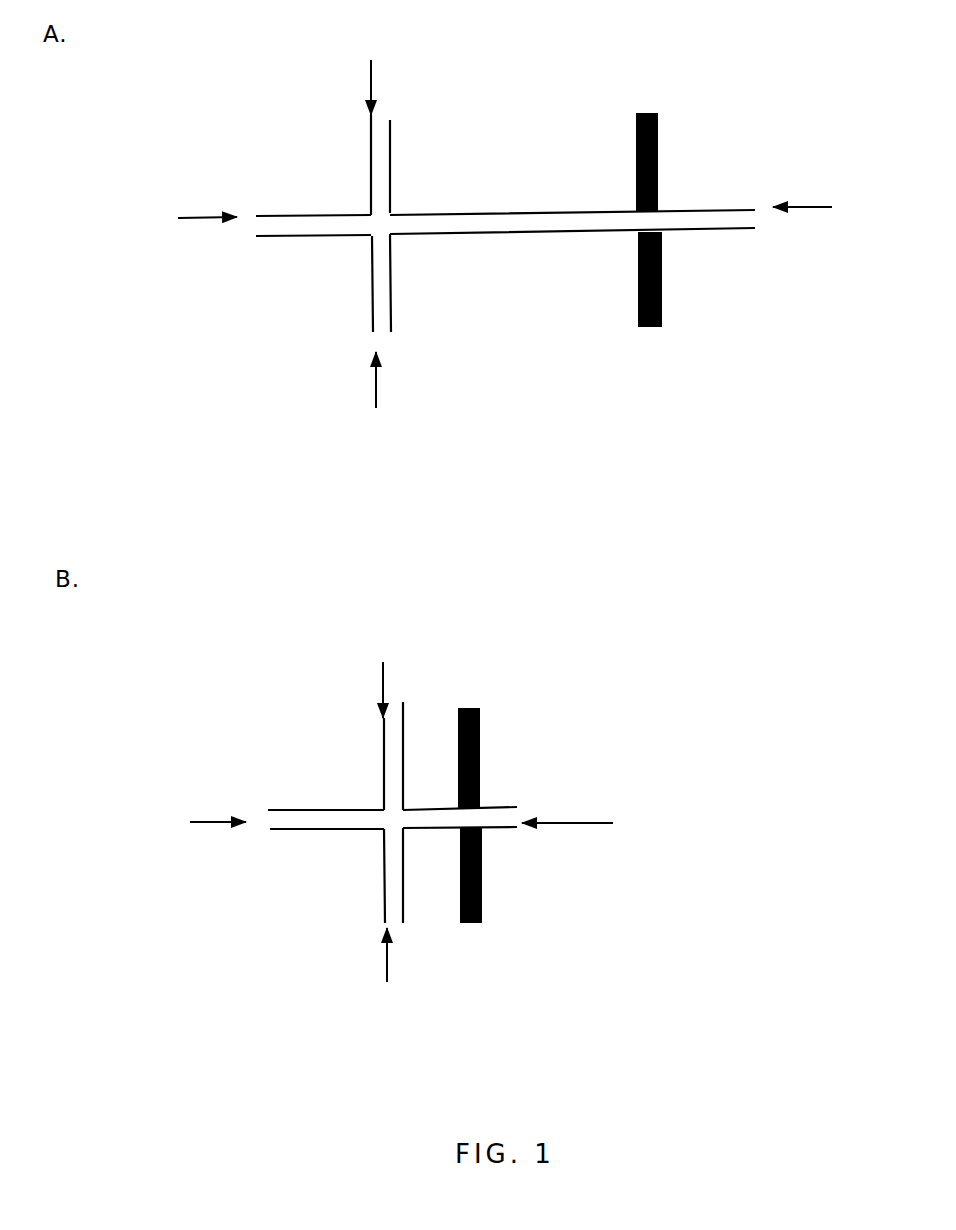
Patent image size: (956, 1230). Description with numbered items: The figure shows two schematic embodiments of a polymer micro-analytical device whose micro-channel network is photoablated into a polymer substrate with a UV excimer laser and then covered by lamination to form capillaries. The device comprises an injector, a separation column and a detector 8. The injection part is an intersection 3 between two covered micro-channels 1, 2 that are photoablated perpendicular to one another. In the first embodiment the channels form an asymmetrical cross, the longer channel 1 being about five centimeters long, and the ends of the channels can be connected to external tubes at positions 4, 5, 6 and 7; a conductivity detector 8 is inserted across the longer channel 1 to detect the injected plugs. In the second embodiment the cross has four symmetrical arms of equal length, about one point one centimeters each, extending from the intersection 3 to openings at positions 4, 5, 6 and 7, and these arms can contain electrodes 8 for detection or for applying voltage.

The main micro-channel 1 is at (525, 233).
The side micro-channel 2 is at (392, 172).
The intersection 3 is at (368, 237).
The external tube connection position 4 is at (379, 376).
The external tube connection position 5 is at (193, 522).
The external tube connection position 6 is at (386, 683).
The external tube connection position 7 is at (689, 516).
The detector 8 is at (678, 267).